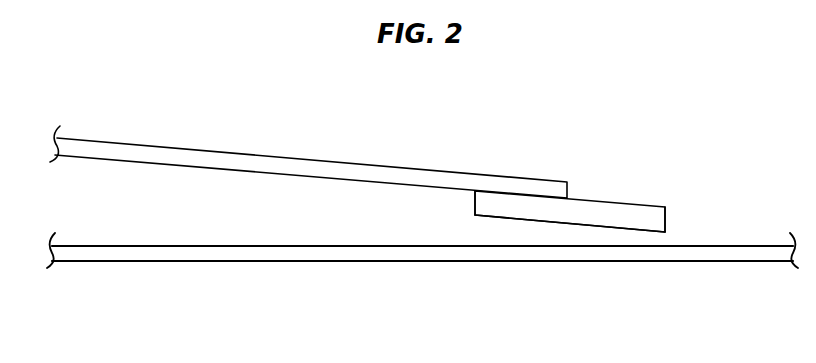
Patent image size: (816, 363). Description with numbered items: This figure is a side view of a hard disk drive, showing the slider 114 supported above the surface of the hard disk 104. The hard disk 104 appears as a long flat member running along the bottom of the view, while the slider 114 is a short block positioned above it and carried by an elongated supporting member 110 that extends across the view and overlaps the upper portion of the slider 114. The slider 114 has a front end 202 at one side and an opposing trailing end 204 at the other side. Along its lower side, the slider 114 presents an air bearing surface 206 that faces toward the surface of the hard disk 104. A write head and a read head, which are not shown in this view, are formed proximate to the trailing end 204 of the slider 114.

The hard disk 104 is at (412, 249).
The first member 110 is at (263, 158).
The slider 114 is at (610, 209).
The front end 202 is at (466, 202).
The trailing end 204 is at (648, 221).
The air bearing surface 206 is at (524, 226).